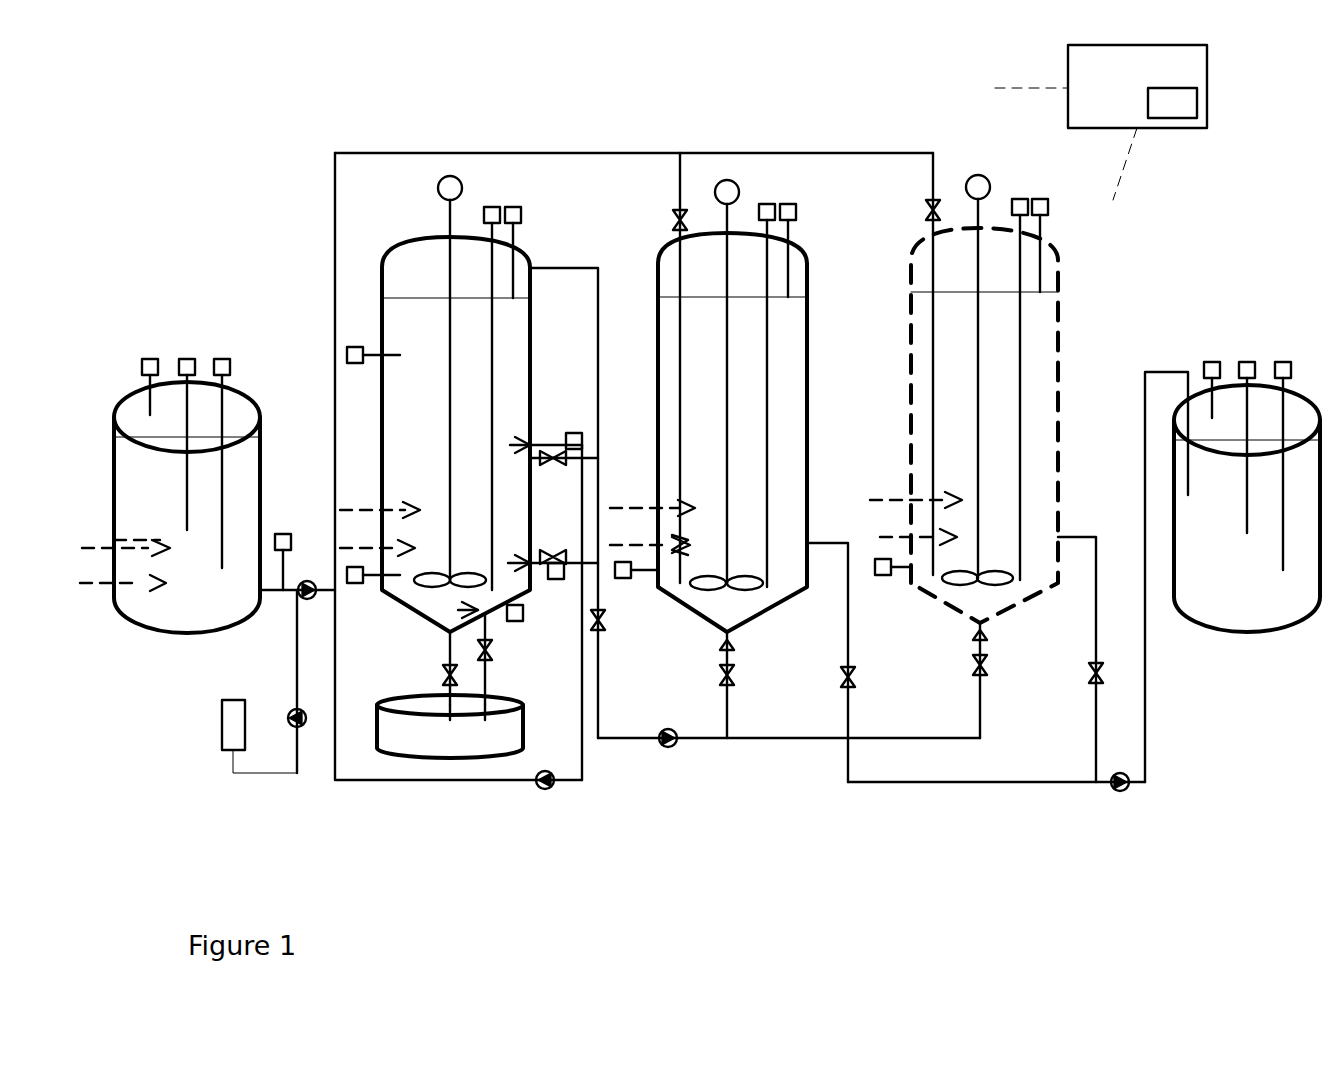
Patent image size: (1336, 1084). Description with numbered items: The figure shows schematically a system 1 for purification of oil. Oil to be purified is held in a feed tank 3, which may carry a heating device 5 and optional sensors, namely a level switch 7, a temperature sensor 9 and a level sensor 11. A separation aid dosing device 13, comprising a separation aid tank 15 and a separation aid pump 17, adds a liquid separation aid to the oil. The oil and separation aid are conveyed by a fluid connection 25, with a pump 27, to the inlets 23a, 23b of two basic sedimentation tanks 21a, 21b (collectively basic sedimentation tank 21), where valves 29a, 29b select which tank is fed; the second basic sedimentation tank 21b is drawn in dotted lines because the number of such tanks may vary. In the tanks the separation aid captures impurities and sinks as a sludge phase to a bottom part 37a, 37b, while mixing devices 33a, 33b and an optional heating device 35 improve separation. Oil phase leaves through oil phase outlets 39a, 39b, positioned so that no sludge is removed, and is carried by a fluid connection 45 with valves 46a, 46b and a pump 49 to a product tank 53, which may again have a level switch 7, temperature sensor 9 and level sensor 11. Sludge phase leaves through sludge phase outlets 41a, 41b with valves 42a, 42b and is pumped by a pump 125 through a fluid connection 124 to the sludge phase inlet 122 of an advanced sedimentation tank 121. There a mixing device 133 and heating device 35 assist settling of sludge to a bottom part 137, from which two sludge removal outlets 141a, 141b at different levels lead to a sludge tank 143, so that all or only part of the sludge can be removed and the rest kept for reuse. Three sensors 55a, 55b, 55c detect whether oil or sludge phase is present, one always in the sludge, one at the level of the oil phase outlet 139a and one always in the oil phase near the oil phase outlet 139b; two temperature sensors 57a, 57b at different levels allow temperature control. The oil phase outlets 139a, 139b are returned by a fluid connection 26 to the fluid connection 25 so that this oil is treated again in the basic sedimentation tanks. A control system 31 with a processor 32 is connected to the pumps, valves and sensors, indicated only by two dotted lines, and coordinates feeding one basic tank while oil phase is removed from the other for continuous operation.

The system for purification of oil 1 is at (255, 145).
The feed tank 3 is at (263, 465).
The heating device 5 is at (114, 620).
The level switch 7 is at (150, 359).
The temperature sensor 9 is at (187, 359).
The level sensor 11 is at (240, 348).
The separation aid dosing device 13 is at (251, 800).
The separation aid tank 15 is at (218, 735).
The separation aid pump 17 is at (288, 716).
The basic sedimentation tank 21 is at (808, 388).
The basic sedimentation tank 21a is at (808, 315).
The basic sedimentation tank 21b is at (1060, 286).
The inlet 23a is at (678, 236).
The inlet 23b is at (932, 240).
The fluid connection 25 is at (333, 395).
The fluid connection 26 is at (455, 785).
The pump 27 is at (307, 599).
The valve 29a is at (674, 218).
The valve 29b is at (927, 218).
The control system 31 is at (1207, 88).
The processor 32 is at (1197, 118).
The mixing device 33a is at (720, 590).
The mixing device 33b is at (962, 590).
The heating device 35 is at (378, 510).
The bottom part 37a is at (820, 515).
The bottom part 37b is at (1072, 510).
The oil phase outlet 39a is at (812, 543).
The oil phase outlet 39b is at (1062, 537).
The sludge phase outlet 41a is at (730, 635).
The sludge phase outlet 41b is at (983, 628).
The valve 42a is at (735, 675).
The valve 42b is at (987, 668).
The fluid connection 45 is at (1005, 785).
The valve 46a is at (855, 680).
The valve 46b is at (1090, 690).
The pump 49 is at (1123, 793).
The product tank 53 is at (1250, 640).
The sensor 55a is at (523, 615).
The sensor 55b is at (556, 579).
The sensor 55c is at (572, 433).
The temperature sensor 57a is at (368, 585).
The temperature sensor 57b is at (362, 345).
The advanced sedimentation tank 121 is at (410, 242).
The sludge phase inlet 122 is at (596, 268).
The fluid connection 124 is at (770, 742).
The pump 125 is at (677, 748).
The mixing device 133 is at (428, 590).
The bottom part 137 is at (462, 520).
The oil phase outlet 139a is at (545, 555).
The oil phase outlet 139b is at (545, 460).
The sludge removal outlet 141a is at (450, 630).
The sludge removal outlet 141b is at (520, 690).
The sludge tank 143 is at (470, 745).